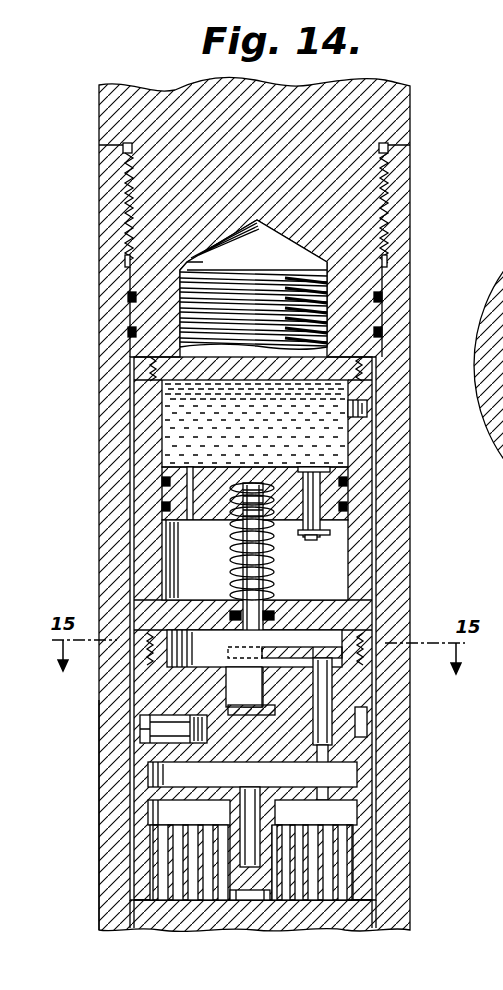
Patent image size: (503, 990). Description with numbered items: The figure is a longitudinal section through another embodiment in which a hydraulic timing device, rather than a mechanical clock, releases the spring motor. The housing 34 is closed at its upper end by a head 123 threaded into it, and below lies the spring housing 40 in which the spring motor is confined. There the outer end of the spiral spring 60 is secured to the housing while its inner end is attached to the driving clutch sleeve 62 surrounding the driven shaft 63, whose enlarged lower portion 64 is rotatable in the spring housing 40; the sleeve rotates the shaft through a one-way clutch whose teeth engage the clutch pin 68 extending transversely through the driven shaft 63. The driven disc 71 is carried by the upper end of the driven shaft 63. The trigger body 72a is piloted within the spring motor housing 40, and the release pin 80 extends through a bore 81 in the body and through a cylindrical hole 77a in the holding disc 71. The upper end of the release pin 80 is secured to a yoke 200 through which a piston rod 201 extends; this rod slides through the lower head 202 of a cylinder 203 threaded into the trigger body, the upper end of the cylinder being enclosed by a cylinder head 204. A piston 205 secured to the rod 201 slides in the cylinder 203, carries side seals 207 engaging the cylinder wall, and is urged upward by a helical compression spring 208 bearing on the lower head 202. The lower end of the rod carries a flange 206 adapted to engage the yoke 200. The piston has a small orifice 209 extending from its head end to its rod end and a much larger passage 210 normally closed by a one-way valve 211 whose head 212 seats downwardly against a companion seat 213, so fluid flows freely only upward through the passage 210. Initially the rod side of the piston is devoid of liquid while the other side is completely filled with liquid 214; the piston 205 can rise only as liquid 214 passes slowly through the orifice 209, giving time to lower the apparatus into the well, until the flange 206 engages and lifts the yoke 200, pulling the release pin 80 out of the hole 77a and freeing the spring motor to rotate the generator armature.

The head 123 is at (345, 199).
The timer and generator housing 34 is at (402, 352).
The seat 213 is at (345, 473).
The piston 205 is at (349, 498).
The passage 210 is at (323, 531).
The yoke 200 is at (330, 628).
The trigger body 72a is at (353, 692).
The bore 81 is at (327, 733).
The release pin 80 is at (323, 777).
The cylindrical hole 77a is at (330, 810).
The spiral spring 60 is at (350, 850).
The spring housing 40 is at (365, 868).
The cylinder head 204 is at (160, 395).
The cylinder 203 is at (140, 432).
The side seals 207 is at (163, 506).
The helical compression spring 208 is at (236, 558).
The lower head 202 is at (215, 604).
The piston rod 201 is at (267, 578).
The one-way valve 211 is at (312, 536).
The flange 206 is at (247, 714).
The driven shaft 63 is at (253, 790).
The driving clutch sleeve 62 is at (233, 833).
The driven disc 71 is at (175, 779).
The clutch pin 68 is at (248, 903).
The enlarged lower portion 64 is at (258, 927).
The orifice 209 is at (192, 467).
The valve head 212 is at (312, 467).
The liquid 214 is at (255, 423).